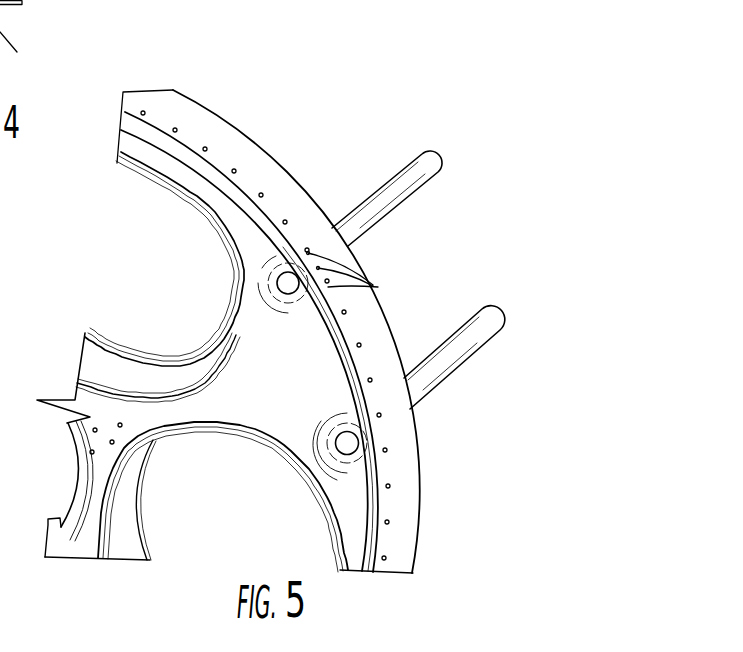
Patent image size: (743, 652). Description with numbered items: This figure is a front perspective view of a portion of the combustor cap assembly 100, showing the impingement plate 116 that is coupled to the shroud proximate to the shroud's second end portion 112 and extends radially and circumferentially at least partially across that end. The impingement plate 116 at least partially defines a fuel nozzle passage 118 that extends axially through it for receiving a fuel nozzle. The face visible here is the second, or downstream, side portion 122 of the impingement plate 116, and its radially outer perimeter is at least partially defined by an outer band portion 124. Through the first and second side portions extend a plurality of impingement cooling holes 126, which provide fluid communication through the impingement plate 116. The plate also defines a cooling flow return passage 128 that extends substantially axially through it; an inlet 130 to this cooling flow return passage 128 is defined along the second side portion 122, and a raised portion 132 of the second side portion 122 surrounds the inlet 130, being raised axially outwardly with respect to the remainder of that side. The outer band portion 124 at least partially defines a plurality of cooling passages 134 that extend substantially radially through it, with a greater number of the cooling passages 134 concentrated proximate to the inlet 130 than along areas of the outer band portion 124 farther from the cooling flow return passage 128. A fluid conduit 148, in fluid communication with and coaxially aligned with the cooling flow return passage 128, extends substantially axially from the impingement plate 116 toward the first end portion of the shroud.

The combustor cap assembly 100 is at (318, 78).
The outer band portion 124 is at (258, 182).
The second end portion 112 is at (14, 58).
The fluid conduit 148 is at (438, 172).
The raised portion 132 is at (262, 277).
The inlet 130 is at (275, 283).
The cooling passages 134 is at (374, 286).
The cooling flow return passage 128 is at (333, 320).
The fuel nozzle passage 118 is at (103, 323).
The second side portion 122 is at (353, 495).
The impingement cooling holes 126 is at (95, 430).
The impingement plate 116 is at (82, 555).